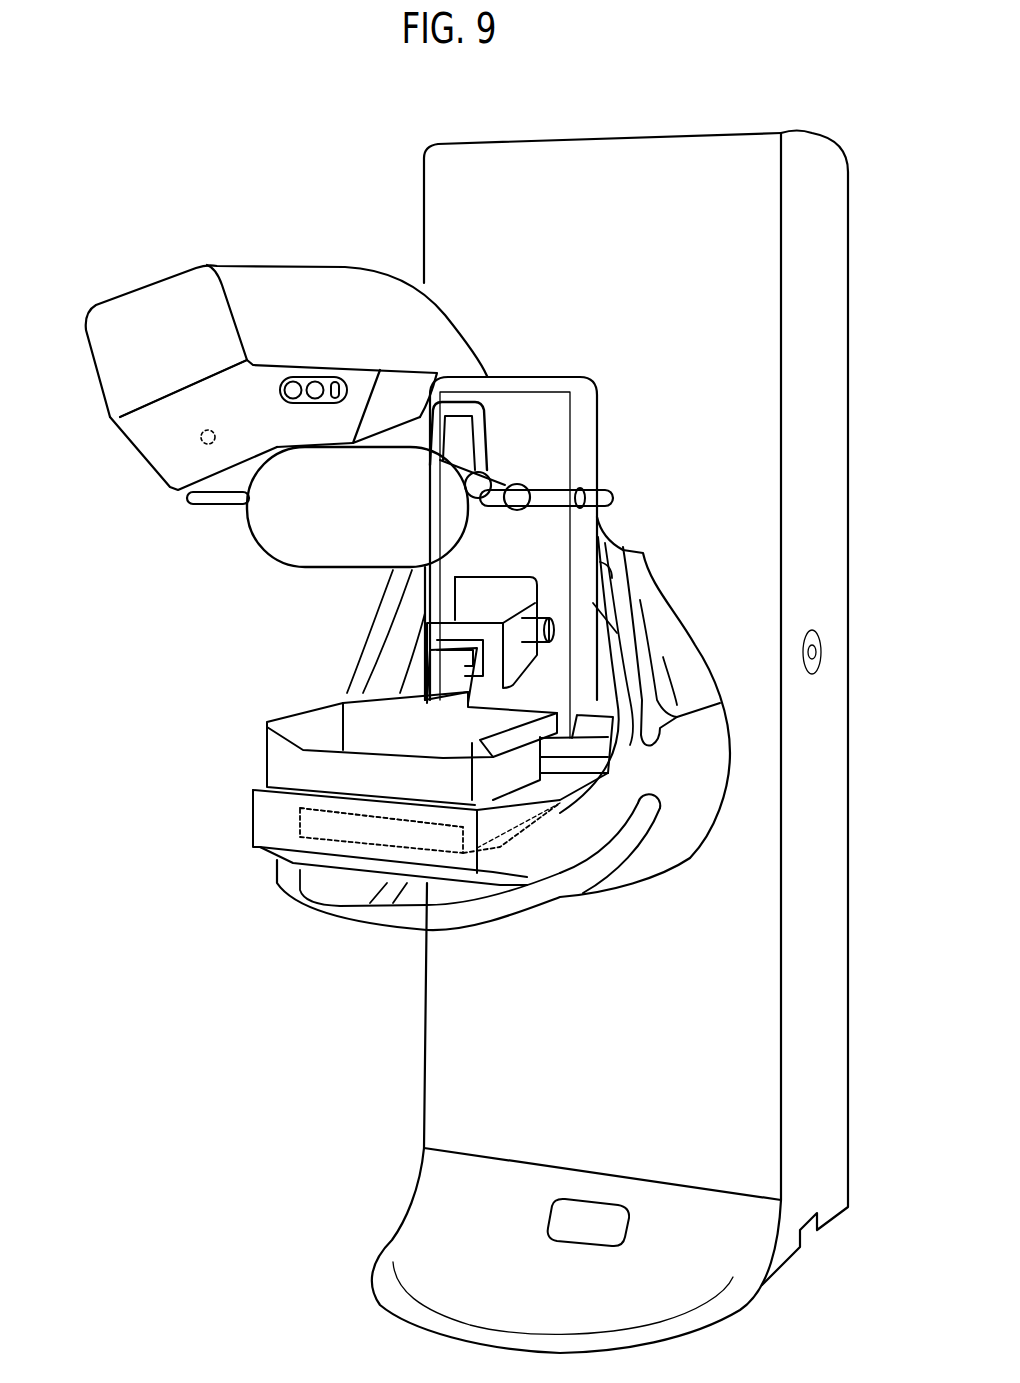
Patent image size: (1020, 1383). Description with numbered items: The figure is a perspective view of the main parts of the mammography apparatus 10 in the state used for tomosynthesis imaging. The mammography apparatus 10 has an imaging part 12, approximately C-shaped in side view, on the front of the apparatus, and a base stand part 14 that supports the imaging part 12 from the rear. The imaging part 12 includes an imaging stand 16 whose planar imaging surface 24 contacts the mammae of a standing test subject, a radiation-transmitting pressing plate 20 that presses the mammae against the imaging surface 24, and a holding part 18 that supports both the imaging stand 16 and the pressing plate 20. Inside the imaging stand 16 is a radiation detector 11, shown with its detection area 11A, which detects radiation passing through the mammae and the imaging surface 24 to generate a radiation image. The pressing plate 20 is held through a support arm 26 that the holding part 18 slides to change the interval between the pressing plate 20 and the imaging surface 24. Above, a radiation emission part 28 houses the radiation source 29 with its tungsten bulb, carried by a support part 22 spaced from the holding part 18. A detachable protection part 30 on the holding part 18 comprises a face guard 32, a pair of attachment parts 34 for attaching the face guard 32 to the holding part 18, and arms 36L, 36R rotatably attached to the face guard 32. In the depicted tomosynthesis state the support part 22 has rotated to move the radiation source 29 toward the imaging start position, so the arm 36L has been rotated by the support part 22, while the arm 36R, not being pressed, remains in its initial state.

The mammography apparatus 10 is at (298, 133).
The radiation detector 11 is at (330, 837).
The detection surface 11A is at (333, 804).
The imaging part 12 is at (431, 326).
The base stand part 14 is at (808, 487).
The imaging stand 16 is at (277, 820).
The holding part 18 is at (580, 410).
The pressing plate 20 is at (303, 768).
The support part 22 is at (307, 300).
The imaging surface 24 is at (537, 787).
The support arm 26 is at (453, 667).
The radiation emission part 28 is at (200, 410).
The radiation source 29 is at (202, 440).
The protection part 30 is at (185, 551).
The face guard 32 is at (298, 528).
The attachment part 34 is at (567, 500).
The arm 36L is at (205, 505).
The arm 36R is at (486, 437).